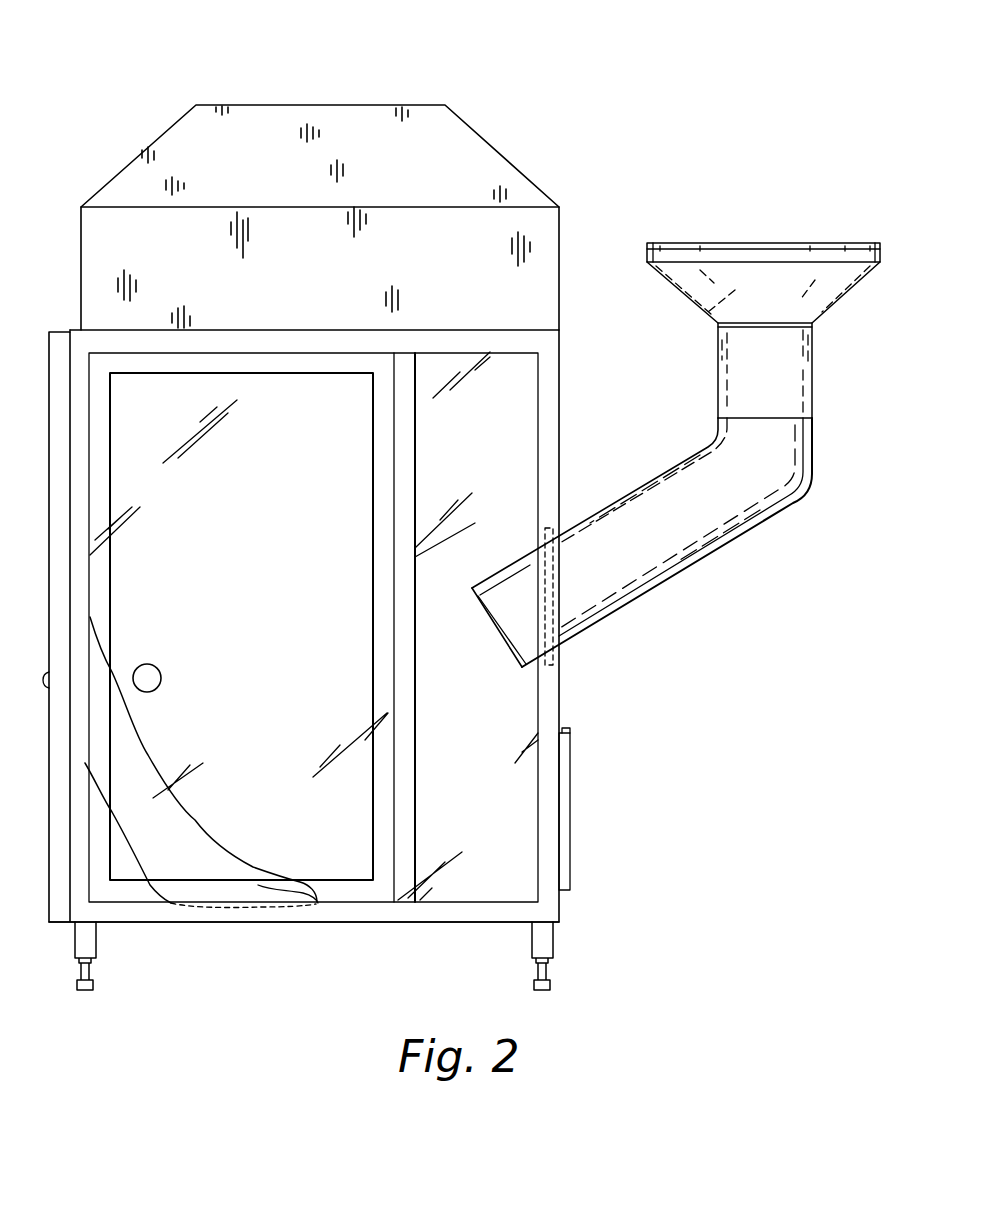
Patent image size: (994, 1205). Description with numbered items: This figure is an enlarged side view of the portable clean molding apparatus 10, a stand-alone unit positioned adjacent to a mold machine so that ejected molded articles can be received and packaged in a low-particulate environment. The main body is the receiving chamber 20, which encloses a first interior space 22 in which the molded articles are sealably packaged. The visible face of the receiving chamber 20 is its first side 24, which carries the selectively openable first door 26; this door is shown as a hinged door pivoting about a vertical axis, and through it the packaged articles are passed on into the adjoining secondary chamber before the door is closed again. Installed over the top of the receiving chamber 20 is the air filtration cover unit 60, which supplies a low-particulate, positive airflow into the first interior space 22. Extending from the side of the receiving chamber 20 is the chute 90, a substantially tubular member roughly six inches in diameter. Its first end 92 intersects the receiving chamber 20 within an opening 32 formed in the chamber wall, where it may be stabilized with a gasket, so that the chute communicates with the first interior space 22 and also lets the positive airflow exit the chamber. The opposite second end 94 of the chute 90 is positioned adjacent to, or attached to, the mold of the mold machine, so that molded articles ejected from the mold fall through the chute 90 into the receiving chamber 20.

The portable clean molding apparatus 10 is at (495, 76).
The receiving chamber 20 is at (325, 958).
The first interior space 22 is at (478, 862).
The first side 24 is at (498, 472).
The first door 26 is at (252, 558).
The opening 32 is at (556, 663).
The air filtration cover unit 60 is at (106, 149).
The chute 90 is at (722, 592).
The first end 92 is at (503, 620).
The second end 94 is at (778, 247).